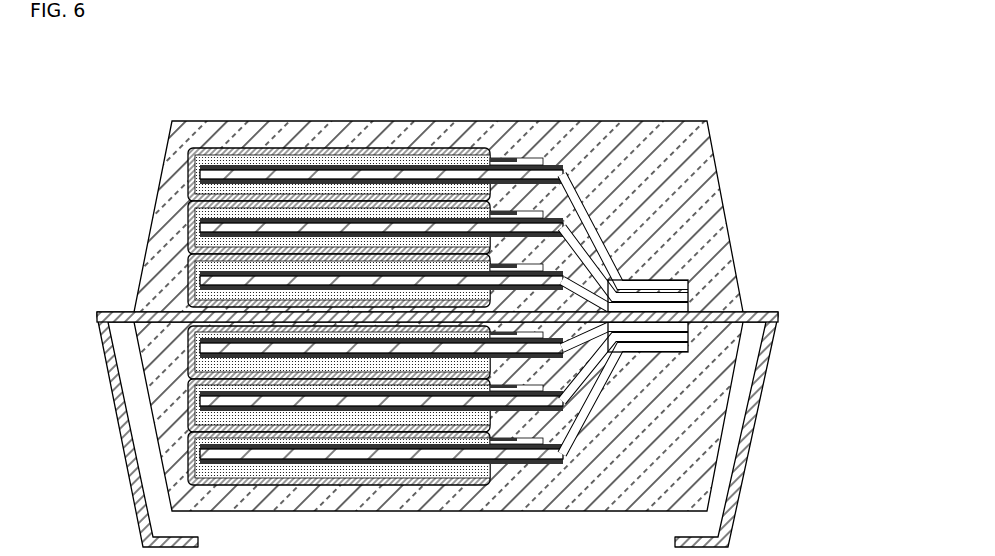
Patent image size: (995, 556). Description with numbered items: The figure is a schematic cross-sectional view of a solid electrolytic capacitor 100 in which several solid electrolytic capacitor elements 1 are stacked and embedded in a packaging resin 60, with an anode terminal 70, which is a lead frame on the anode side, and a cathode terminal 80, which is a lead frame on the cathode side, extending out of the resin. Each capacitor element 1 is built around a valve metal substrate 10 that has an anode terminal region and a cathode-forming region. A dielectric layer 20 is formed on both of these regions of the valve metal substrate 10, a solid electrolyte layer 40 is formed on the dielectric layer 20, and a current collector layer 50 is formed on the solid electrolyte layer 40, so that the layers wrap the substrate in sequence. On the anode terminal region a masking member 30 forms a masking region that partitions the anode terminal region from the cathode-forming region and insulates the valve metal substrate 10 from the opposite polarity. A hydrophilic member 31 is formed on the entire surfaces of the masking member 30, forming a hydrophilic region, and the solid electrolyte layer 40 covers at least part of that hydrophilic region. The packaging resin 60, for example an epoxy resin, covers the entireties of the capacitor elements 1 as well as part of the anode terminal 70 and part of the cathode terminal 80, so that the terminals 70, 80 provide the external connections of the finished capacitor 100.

The solid electrolytic capacitor 100 is at (426, 291).
The solid electrolytic capacitor element 1 is at (376, 278).
The valve metal substrate 10 is at (416, 177).
The dielectric layer 20 is at (370, 170).
The masking member 30 is at (538, 158).
The hydrophilic member 31 is at (498, 157).
The solid electrolyte layer 40 is at (312, 158).
The current collector layer 50 is at (262, 148).
The packaging resin 60 is at (707, 208).
The anode terminal 70 is at (733, 515).
The cathode terminal 80 is at (113, 377).